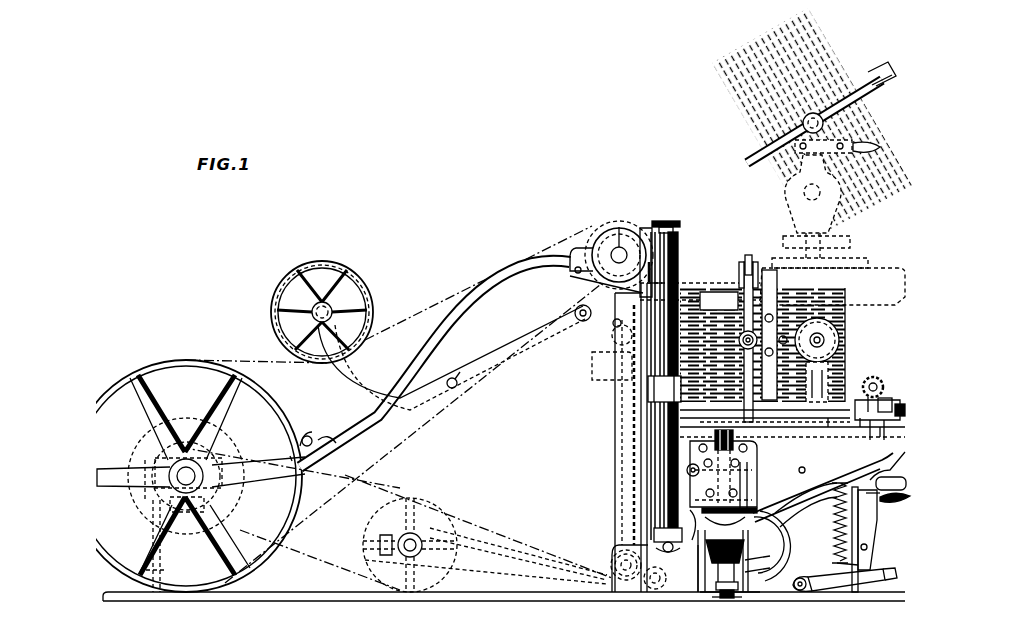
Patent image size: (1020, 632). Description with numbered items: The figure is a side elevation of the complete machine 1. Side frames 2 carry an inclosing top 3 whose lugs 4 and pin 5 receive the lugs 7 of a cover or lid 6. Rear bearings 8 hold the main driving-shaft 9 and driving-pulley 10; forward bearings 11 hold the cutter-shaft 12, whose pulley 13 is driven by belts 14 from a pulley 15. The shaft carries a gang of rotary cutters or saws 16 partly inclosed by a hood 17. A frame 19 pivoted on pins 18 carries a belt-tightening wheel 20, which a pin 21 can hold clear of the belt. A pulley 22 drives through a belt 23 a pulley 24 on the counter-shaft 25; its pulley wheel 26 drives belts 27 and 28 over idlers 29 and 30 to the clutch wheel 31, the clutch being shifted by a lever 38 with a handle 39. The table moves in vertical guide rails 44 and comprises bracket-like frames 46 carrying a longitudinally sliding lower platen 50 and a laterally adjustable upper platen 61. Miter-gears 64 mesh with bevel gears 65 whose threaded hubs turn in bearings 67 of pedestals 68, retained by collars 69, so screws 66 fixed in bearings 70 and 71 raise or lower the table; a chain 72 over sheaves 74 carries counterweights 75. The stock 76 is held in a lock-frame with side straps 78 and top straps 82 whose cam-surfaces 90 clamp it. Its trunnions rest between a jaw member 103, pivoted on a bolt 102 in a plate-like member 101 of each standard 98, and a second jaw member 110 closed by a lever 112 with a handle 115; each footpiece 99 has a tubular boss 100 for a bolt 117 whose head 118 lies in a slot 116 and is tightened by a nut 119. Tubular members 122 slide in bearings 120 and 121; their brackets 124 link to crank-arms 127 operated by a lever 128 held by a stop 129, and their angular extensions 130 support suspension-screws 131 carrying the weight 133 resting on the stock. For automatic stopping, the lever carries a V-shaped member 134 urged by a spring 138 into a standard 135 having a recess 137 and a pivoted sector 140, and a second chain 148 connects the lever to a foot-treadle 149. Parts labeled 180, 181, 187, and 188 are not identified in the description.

The complete machine 1 is at (491, 242).
The side frames 2 is at (504, 525).
The inclosing top 3 is at (288, 458).
The perforated ears or lugs 4 is at (308, 435).
The pin 5 is at (302, 440).
The cover or lid 6 is at (428, 350).
The perforated ears or lugs 7 is at (329, 428).
The bearings 8 is at (183, 452).
The main driving-shaft 9 is at (180, 482).
The driving-pulley 10 is at (177, 420).
The bearings 11 is at (588, 245).
The shaft 12 is at (614, 228).
The pulley 13 is at (628, 230).
The belts 14 is at (240, 362).
The pulley 15 is at (168, 370).
The rotary cutters or saws 16 is at (648, 226).
The hood 17 is at (602, 225).
The shaft, rod, or pins 18 is at (578, 313).
The frame 19 is at (372, 372).
The wheel 20 is at (355, 272).
The pin 21 is at (463, 368).
The pulley 22 is at (150, 455).
The belt 23 is at (358, 480).
The pulley 24 is at (450, 518).
The counter-shaft 25 is at (400, 540).
The pulley wheel 26 is at (418, 535).
The belt 27 is at (490, 574).
The belt 28 is at (505, 545).
The idler 29 is at (664, 592).
The idler 30 is at (612, 560).
The wheel 31 is at (780, 560).
The lever 38 is at (806, 505).
The handle 39 is at (888, 488).
The vertical guide portions or rails 44 is at (640, 408).
The bracket-like frames 46 is at (823, 485).
The lower platen 50 is at (862, 427).
The upper platen 61 is at (752, 412).
The miter-gears 64 is at (790, 536).
The miter or bevel gear 65 is at (752, 490).
The screws 66 is at (738, 592).
The bearings 67 is at (787, 547).
The standards or pedestals 68 is at (700, 590).
The collar 69 is at (758, 590).
The bearings 70 is at (750, 455).
The bearings 71 is at (722, 467).
The chain 72 is at (632, 452).
The sheaves or grooved wheels 74 is at (612, 328).
The counterbalances or weights 75 is at (592, 376).
The stock 76 is at (840, 280).
The side straps 78 is at (762, 280).
The top straps 82 is at (741, 268).
The cam-surfaces 90 is at (748, 258).
The standards 98 is at (885, 379).
The footpiece 99 is at (855, 401).
The tubular boss 100 is at (882, 378).
The disk or plate-like member 101 is at (835, 330).
The bolt or pin 102 is at (826, 340).
The jaw member 103 is at (720, 292).
The second jaw member 110 is at (765, 415).
The lever 112 is at (842, 307).
The handles 115 is at (780, 272).
The undercut grooves or slots 116 is at (815, 427).
The bolts 117 is at (830, 380).
The heads 118 is at (828, 427).
The nuts 119 is at (828, 372).
The bearings 120 is at (654, 508).
The bearings 121 is at (652, 395).
The rods or tubular members 122 is at (660, 418).
The bracket or step 124 is at (655, 530).
The crank-arms 127 is at (638, 468).
The lever 128 is at (891, 467).
The stop 129 is at (813, 460).
The angular extension 130 is at (680, 240).
The adjustable suspension-screws 131 is at (680, 221).
The cross-bar or weight 133 is at (680, 258).
The V-shaped member 134 is at (869, 510).
The standard 135 is at (862, 566).
The V-shaped depression or recess 137 is at (872, 527).
The spring 138 is at (838, 550).
The sector 140 is at (868, 548).
The link 148 is at (860, 585).
The second foot-treadle 149 is at (828, 584).
The stud 180 is at (882, 443).
The clamp 181 is at (901, 392).
The knob 187 is at (909, 401).
The support 188 is at (891, 435).